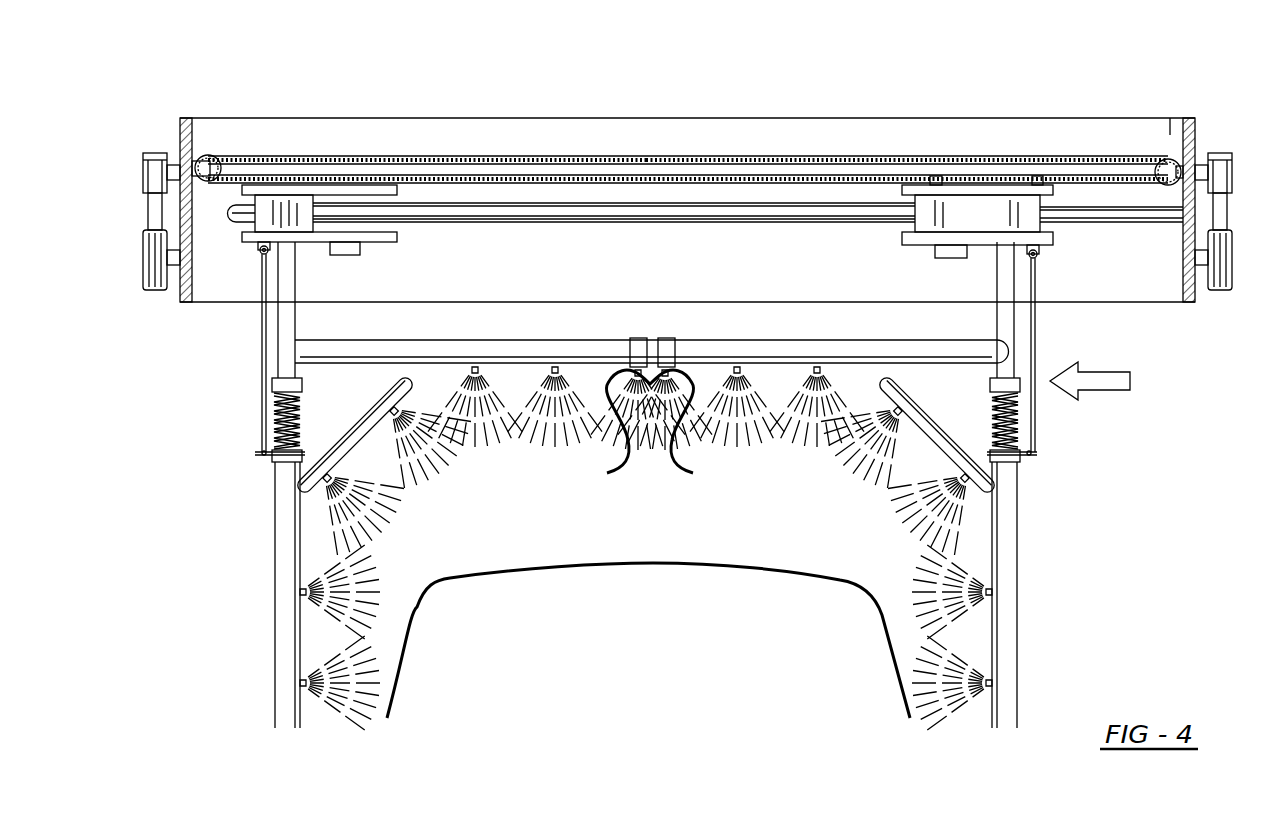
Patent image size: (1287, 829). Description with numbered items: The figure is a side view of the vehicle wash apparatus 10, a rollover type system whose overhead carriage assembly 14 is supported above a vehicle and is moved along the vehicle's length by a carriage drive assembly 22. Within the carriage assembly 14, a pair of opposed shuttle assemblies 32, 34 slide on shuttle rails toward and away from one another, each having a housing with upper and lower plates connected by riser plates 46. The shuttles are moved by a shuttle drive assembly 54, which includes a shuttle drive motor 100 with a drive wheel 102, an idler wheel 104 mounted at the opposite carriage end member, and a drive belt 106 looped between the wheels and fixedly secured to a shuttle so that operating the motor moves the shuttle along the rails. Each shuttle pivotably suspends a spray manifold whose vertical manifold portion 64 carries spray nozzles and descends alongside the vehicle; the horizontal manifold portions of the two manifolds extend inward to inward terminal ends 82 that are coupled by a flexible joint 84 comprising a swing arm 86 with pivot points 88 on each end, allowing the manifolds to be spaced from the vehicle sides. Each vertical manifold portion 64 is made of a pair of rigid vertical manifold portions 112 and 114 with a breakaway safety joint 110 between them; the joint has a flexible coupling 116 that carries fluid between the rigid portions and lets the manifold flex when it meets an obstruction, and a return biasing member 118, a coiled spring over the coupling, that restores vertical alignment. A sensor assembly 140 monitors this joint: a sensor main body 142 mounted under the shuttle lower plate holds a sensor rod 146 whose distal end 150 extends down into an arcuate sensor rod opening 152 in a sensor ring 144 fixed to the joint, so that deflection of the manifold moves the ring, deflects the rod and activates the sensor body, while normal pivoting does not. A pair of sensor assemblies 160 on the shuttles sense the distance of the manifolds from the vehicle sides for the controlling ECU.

The vehicle wash apparatus 10 is at (497, 105).
The carriage assembly 14 is at (548, 105).
The carriage drive assembly 22 is at (1245, 292).
The shuttle assembly 32 is at (375, 148).
The shuttle assembly 34 is at (1008, 140).
The riser plates 46 is at (905, 222).
The shuttle drive assembly 54 is at (1140, 140).
The vertical manifold portion 64 is at (275, 672).
The inward terminal ends 82 is at (618, 338).
The flexible joint 84 is at (638, 330).
The swing arm 86 is at (668, 335).
The pivot points 88 is at (607, 473).
The shuttle drive motor 100 is at (1174, 185).
The drive wheel 102 is at (1165, 185).
The idler wheel 104 is at (207, 157).
The drive belt 106 is at (632, 157).
The breakaway safety joint 110 is at (242, 428).
The rigid vertical manifold portion 112 is at (297, 308).
The rigid vertical manifold portion 114 is at (275, 592).
The flexible coupling 116 is at (300, 436).
The return biasing member 118 is at (300, 408).
The sensor assembly 140 is at (258, 262).
The sensor main body 142 is at (248, 268).
The sensor ring 144 is at (262, 452).
The sensor rod 146 is at (260, 332).
The distal end 150 is at (258, 456).
The sensor rod opening 152 is at (258, 453).
The sensor assemblies 160 is at (430, 243).